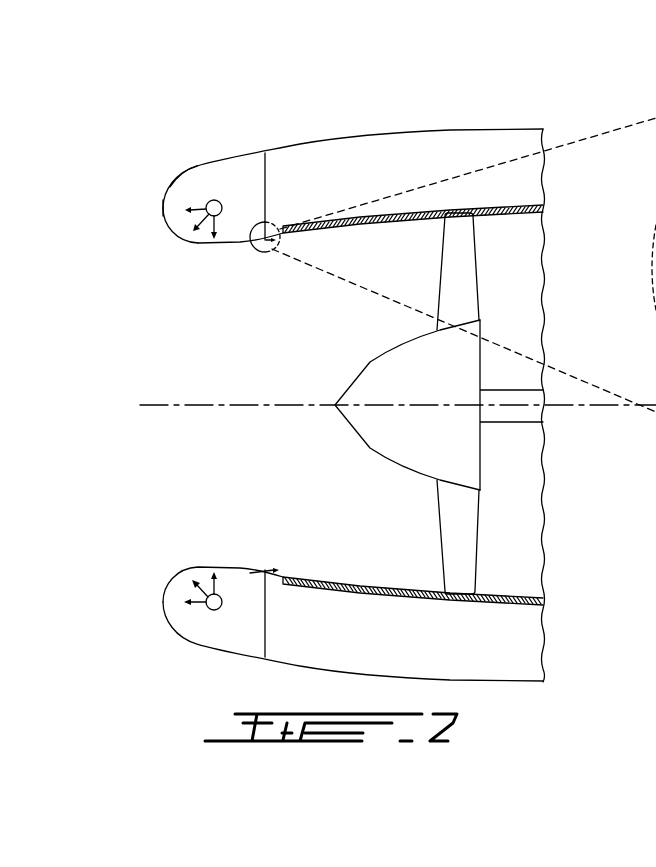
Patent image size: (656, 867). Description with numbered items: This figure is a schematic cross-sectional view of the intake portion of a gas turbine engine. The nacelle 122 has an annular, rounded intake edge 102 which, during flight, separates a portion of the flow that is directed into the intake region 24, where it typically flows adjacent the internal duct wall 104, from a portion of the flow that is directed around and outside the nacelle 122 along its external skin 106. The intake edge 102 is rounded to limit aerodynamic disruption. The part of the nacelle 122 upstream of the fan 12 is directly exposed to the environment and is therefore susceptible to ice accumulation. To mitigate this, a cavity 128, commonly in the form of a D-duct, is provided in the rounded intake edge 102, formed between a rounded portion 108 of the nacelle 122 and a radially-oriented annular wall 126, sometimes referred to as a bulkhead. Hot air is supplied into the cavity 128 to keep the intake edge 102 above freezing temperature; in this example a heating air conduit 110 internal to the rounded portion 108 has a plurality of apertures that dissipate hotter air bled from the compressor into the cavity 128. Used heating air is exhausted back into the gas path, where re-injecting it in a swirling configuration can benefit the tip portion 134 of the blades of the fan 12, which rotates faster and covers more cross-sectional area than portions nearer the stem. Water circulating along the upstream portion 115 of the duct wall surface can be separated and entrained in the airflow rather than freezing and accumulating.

The fan 12 is at (458, 525).
The intake region 24 is at (243, 370).
The intake edge 102 is at (163, 207).
The internal duct wall 104 is at (252, 240).
The external skin 106 is at (357, 137).
The rounded portion 108 is at (170, 187).
The heating air conduit 110 is at (217, 200).
The upstream portion 115 is at (383, 242).
The nacelle 122 is at (508, 128).
The radially-oriented annular wall 126 is at (267, 190).
The cavity 128 is at (195, 190).
The tip portion 134 is at (515, 222).